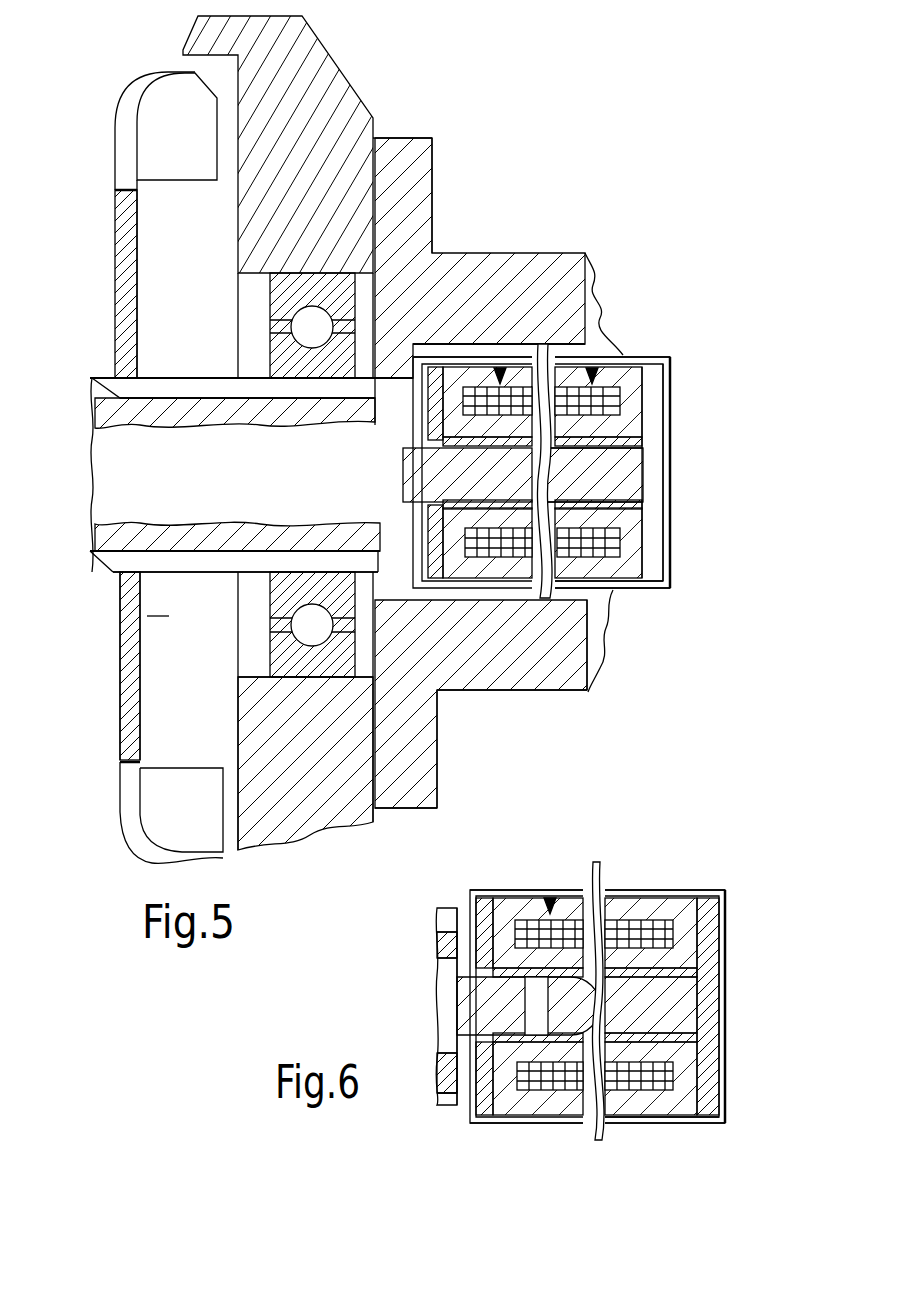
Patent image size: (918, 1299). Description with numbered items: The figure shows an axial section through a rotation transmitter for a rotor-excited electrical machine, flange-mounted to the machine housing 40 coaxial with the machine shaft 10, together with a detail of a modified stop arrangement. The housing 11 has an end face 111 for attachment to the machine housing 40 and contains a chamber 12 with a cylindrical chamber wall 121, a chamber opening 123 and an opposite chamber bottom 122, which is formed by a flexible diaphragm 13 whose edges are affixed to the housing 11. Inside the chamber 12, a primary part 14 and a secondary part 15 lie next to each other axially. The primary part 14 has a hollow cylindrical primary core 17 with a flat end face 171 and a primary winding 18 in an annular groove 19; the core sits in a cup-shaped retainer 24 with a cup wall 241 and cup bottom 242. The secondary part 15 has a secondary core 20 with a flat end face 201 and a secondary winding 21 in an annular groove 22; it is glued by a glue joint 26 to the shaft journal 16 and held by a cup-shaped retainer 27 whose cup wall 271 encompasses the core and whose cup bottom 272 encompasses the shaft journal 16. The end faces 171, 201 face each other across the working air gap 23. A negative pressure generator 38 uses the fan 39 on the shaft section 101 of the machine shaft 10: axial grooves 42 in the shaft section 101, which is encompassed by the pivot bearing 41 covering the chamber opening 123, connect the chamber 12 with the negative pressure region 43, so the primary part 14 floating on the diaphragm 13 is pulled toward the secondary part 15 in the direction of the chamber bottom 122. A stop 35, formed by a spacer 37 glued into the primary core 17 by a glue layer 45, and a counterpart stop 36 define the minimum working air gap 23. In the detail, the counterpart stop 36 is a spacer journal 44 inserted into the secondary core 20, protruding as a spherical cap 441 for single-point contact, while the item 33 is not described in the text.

In FIG. 5, the machine shaft 10 is at (130, 462).
In FIG. 6, the machine shaft 10 is at (436, 983).
In FIG. 5, the housing 11 is at (494, 244).
In FIG. 5, the chamber 12 is at (436, 257).
In FIG. 5, the flexible diaphragm 13 is at (623, 330).
In FIG. 5, the primary part 14 is at (610, 353).
In FIG. 6, the primary part 14 is at (656, 886).
In FIG. 5, the secondary part 15 is at (540, 353).
In FIG. 6, the secondary part 15 is at (543, 898).
In FIG. 5, the shaft journal 16 is at (580, 433).
In FIG. 6, the shaft journal 16 is at (473, 1013).
In FIG. 5, the primary core 17 is at (640, 590).
In FIG. 6, the primary core 17 is at (668, 1110).
In FIG. 5, the primary winding 18 is at (655, 560).
In FIG. 5, the annular groove 19 is at (613, 598).
In FIG. 5, the secondary core 20 is at (473, 587).
In FIG. 6, the secondary core 20 is at (530, 1120).
In FIG. 5, the secondary winding 21 is at (578, 695).
In FIG. 5, the annular groove 22 is at (538, 582).
In FIG. 5, the working air gap 23 is at (552, 353).
In FIG. 6, the working air gap 23 is at (578, 895).
In FIG. 5, the cup-shaped retainer 24 is at (670, 360).
In FIG. 6, the cup-shaped retainer 24 is at (723, 1100).
In FIG. 5, the glue joint 26 is at (420, 515).
In FIG. 5, the cup-shaped retainer 27 is at (380, 432).
In FIG. 6, the cup-shaped retainer 27 is at (468, 898).
In FIG. 5, the pole marker 33 is at (507, 353).
In FIG. 5, the stop 35 is at (643, 473).
In FIG. 6, the stop 35 is at (690, 1030).
In FIG. 5, the counterpart stop 36 is at (480, 470).
In FIG. 6, the counterpart stop 36 is at (573, 1095).
In FIG. 5, the spacer 37 is at (590, 463).
In FIG. 6, the spacer 37 is at (688, 995).
In FIG. 5, the negative pressure generator 38 is at (125, 698).
In FIG. 5, the fan 39 is at (130, 137).
In FIG. 5, the machine housing 40 is at (312, 108).
In FIG. 5, the pivot bearing 41 is at (285, 308).
In FIG. 5, the axial grooves 42 is at (180, 393).
In FIG. 6, the axial grooves 42 is at (445, 918).
In FIG. 5, the negative pressure region 43 is at (140, 685).
In FIG. 6, the spacer journal 44 is at (518, 905).
In FIG. 5, the glue layer 45 is at (670, 553).
In FIG. 6, the glue layer 45 is at (700, 930).
In FIG. 5, the shaft section 101 is at (130, 541).
In FIG. 6, the shaft section 101 is at (437, 1093).
In FIG. 5, the end face 111 is at (388, 160).
In FIG. 5, the cylindrical chamber wall 121 is at (413, 605).
In FIG. 5, the chamber bottom 122 is at (672, 522).
In FIG. 5, the chamber opening 123 is at (427, 137).
In FIG. 5, the end face 171 is at (598, 655).
In FIG. 6, the end face 171 is at (605, 1120).
In FIG. 5, the end face 201 is at (588, 353).
In FIG. 6, the end face 201 is at (606, 893).
In FIG. 5, the cup wall 241 is at (638, 352).
In FIG. 5, the cup bottom 242 is at (675, 497).
In FIG. 5, the cup wall 271 is at (460, 347).
In FIG. 5, the cup bottom 272 is at (405, 433).
In FIG. 6, the spherical cap 441 is at (675, 918).